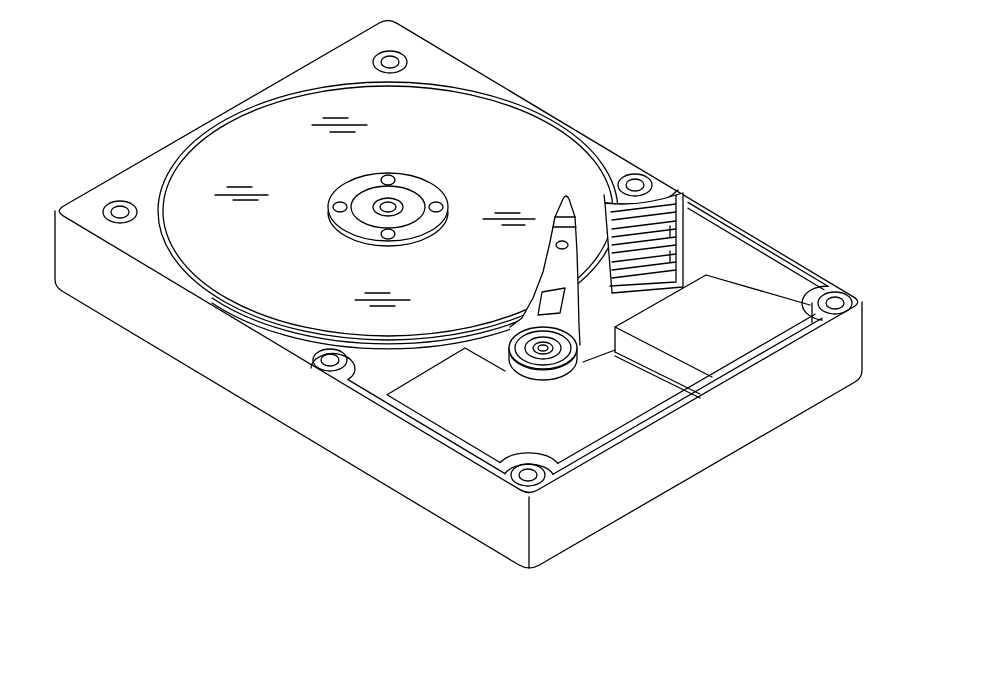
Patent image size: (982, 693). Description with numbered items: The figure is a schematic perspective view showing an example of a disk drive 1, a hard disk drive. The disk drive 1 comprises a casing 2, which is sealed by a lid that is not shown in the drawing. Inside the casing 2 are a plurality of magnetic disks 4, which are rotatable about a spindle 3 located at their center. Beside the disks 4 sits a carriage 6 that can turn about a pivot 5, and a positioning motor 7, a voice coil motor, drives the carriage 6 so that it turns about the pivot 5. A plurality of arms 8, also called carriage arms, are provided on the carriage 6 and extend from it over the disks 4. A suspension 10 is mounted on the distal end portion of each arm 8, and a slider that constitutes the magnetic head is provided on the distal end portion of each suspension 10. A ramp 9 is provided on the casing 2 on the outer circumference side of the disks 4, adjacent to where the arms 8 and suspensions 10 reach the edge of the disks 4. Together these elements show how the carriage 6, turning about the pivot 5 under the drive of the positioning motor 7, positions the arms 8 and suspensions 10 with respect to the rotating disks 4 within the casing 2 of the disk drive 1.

The disk drive 1 is at (752, 107).
The casing 2 is at (253, 392).
The spindle 3 is at (402, 193).
The magnetic disk 4 is at (503, 133).
The pivot 5 is at (560, 367).
The carriage 6 is at (598, 327).
The positioning motor 7 is at (467, 430).
The arm 8 is at (568, 262).
The ramp 9 is at (665, 204).
The suspension 10 is at (560, 214).